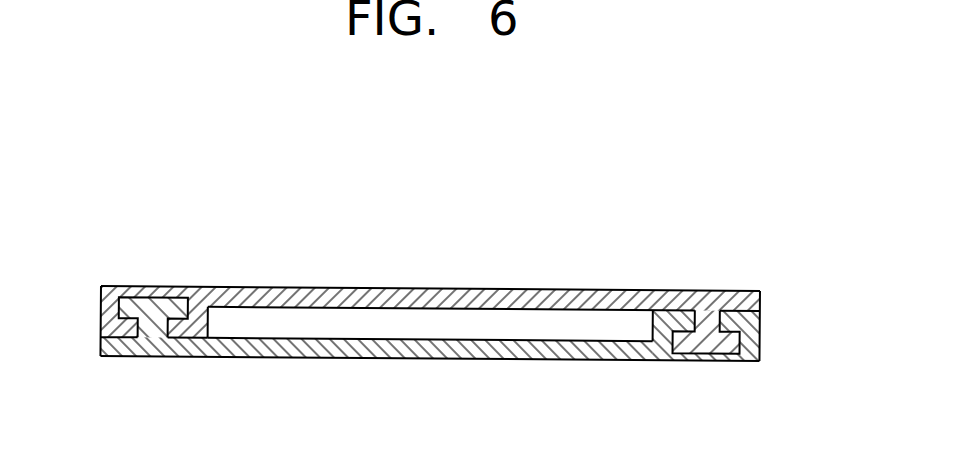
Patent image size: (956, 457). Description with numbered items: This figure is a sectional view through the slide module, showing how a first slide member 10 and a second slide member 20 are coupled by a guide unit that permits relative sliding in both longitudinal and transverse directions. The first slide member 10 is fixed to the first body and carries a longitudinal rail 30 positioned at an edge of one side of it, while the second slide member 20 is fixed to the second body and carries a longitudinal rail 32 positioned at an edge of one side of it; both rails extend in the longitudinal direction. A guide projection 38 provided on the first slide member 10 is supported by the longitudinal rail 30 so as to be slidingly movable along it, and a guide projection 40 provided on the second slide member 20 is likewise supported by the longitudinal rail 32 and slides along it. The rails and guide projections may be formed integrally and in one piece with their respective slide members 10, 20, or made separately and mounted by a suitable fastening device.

The first slide member 10 is at (435, 292).
The second slide member 20 is at (435, 359).
The longitudinal rail 30 is at (102, 314).
The longitudinal rail 32 is at (760, 334).
The guide projection 40 is at (152, 302).
The guide projection 38 is at (708, 349).